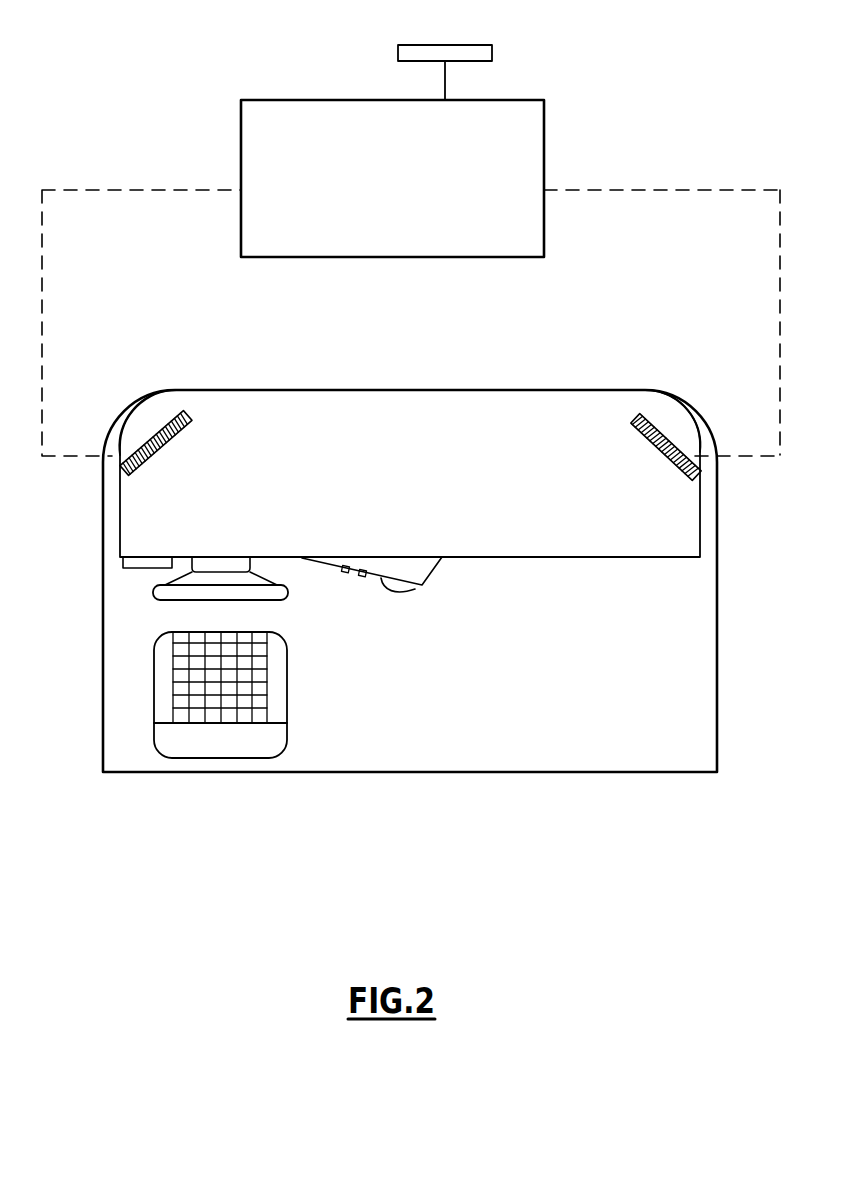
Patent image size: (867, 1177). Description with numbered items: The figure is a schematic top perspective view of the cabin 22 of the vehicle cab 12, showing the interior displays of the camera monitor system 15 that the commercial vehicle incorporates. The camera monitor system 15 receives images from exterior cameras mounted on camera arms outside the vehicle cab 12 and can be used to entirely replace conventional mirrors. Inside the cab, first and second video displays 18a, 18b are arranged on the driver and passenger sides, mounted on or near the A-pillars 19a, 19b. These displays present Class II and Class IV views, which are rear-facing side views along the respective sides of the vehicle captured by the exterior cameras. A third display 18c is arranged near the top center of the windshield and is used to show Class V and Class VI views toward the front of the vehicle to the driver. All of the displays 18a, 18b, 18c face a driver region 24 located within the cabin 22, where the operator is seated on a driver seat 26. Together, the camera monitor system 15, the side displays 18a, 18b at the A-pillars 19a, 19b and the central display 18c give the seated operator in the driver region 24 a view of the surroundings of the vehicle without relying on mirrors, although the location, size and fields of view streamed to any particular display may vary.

The vehicle cab 12 is at (522, 371).
The camera monitor system 15 is at (544, 115).
The first video display 18a is at (152, 429).
The second video display 18b is at (670, 428).
The third display 18c is at (477, 45).
The A-pillar 19a is at (120, 430).
The A-pillar 19b is at (698, 427).
The cabin 22 is at (633, 720).
The driver region 24 is at (352, 585).
The driver seat 26 is at (275, 682).